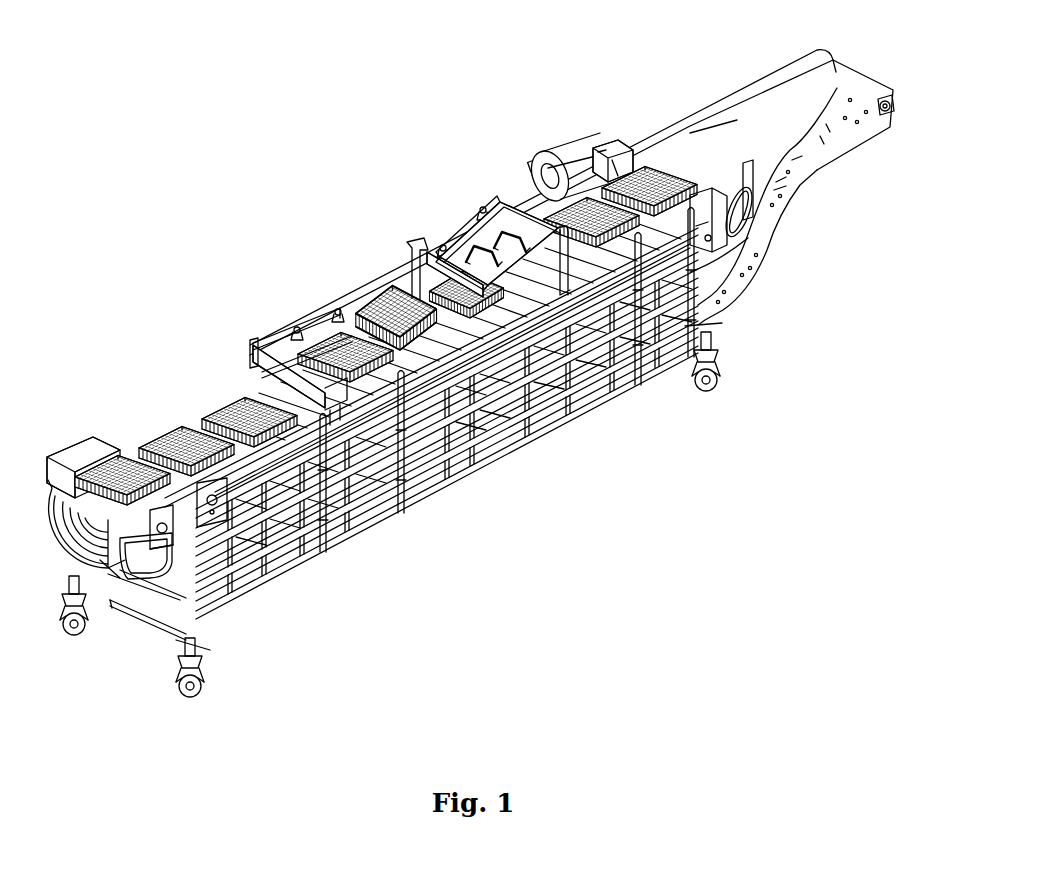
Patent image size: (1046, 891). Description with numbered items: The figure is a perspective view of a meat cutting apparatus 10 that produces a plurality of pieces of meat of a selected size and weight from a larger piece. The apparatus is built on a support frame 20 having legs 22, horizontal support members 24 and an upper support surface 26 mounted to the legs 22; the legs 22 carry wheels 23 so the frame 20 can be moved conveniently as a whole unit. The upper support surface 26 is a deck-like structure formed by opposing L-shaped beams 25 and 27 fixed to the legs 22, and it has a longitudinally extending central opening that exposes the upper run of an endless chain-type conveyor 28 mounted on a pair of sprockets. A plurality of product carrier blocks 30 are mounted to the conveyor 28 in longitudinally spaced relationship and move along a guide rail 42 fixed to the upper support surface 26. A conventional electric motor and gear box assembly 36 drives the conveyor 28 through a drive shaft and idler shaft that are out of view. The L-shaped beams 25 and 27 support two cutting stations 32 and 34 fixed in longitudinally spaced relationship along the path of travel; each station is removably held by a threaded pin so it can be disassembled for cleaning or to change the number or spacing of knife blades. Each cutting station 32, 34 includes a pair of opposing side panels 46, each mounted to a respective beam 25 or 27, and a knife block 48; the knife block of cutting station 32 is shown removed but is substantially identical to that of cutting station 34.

The meat cutting apparatus 10 is at (266, 135).
The support frame 20 is at (372, 435).
The legs 22 is at (330, 552).
The wheels 23 is at (172, 688).
The horizontal support members 24 is at (268, 580).
The L-shaped beam 25 is at (663, 132).
The upper support surface 26 is at (422, 362).
The L-shaped beam 27 is at (527, 272).
The chain-type conveyor 28 is at (613, 150).
The product carrier blocks 30 is at (221, 387).
The cutting station 32 is at (336, 294).
The cutting station 34 is at (453, 207).
The electric motor and gear box assembly 36 is at (578, 111).
The guide rail 42 is at (440, 368).
The side panels 46 is at (338, 310).
The knife block 48 is at (510, 232).